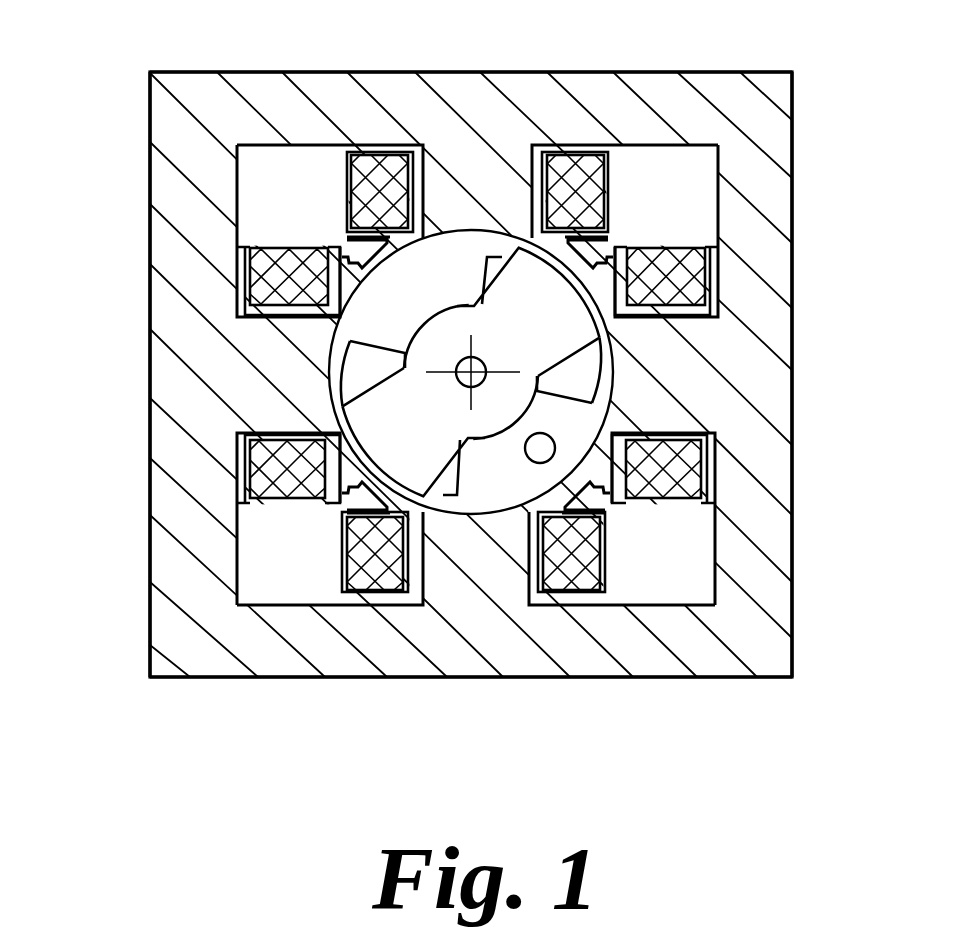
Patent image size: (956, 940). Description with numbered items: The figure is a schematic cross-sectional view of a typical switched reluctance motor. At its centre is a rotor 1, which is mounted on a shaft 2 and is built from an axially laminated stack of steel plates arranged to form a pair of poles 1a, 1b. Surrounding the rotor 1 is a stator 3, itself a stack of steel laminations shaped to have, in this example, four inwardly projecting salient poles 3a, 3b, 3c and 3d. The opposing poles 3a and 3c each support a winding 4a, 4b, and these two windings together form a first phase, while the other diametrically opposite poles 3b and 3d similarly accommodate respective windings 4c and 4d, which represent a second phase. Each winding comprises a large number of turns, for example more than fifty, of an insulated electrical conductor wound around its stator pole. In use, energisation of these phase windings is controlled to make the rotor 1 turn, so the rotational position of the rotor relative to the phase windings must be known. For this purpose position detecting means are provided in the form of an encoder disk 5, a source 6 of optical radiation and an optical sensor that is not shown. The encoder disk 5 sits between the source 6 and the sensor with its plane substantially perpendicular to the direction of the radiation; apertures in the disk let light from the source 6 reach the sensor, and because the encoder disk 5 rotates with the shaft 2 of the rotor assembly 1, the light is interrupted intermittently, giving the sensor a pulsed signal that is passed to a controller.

The rotor 1 is at (548, 320).
The rotor pole 1a is at (521, 242).
The rotor pole 1b is at (387, 463).
The shaft 2 is at (460, 362).
The stator 3 is at (647, 395).
The stator pole 3a is at (462, 163).
The stator pole 3b is at (715, 347).
The stator pole 3c is at (486, 547).
The stator pole 3d is at (262, 385).
The winding 4a is at (378, 177).
The winding 4b is at (683, 284).
The winding 4c is at (385, 598).
The winding 4d is at (265, 285).
The encoder disk 5 is at (580, 357).
The source of optical radiation 6 is at (551, 459).